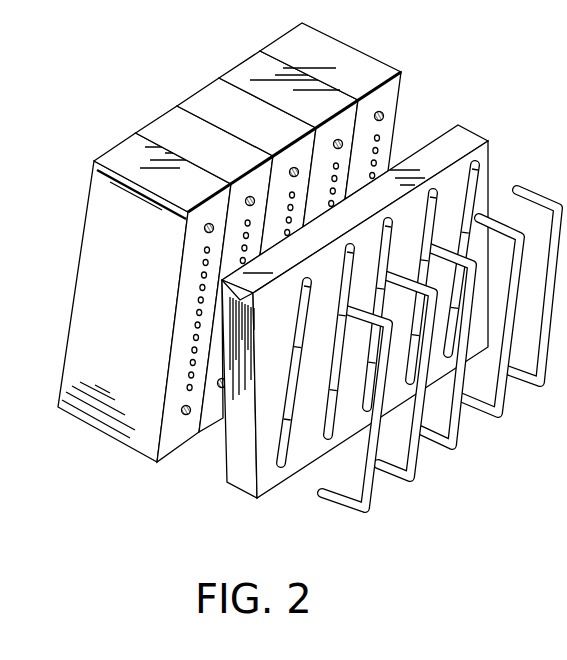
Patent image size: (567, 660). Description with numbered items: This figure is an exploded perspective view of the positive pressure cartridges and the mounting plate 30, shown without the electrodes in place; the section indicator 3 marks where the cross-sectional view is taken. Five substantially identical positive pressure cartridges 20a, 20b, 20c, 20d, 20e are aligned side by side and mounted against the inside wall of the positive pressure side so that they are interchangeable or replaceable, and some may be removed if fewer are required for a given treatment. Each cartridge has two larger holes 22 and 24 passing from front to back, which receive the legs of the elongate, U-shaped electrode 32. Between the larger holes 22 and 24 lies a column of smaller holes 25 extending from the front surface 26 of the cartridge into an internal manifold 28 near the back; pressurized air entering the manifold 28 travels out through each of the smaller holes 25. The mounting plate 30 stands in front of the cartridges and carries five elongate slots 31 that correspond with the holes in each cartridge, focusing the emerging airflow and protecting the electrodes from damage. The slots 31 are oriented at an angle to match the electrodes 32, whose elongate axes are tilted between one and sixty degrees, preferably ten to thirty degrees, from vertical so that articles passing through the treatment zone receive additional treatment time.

The positive pressure cartridge 20a is at (118, 152).
The positive pressure cartridge 20b is at (157, 123).
The positive pressure cartridge 20c is at (203, 92).
The positive pressure cartridge 20d is at (245, 63).
The positive pressure cartridge 20e is at (336, 52).
The larger hole 22 is at (203, 229).
The larger hole 24 is at (186, 416).
The smaller holes 25 is at (196, 321).
The front surface 26 is at (488, 174).
The internal manifold 28 is at (478, 357).
The mounting plate 30 is at (262, 499).
The elongate slots 31 is at (320, 487).
The electrode 32 is at (494, 418).
The section line of FIG. 3 is at (252, 23).